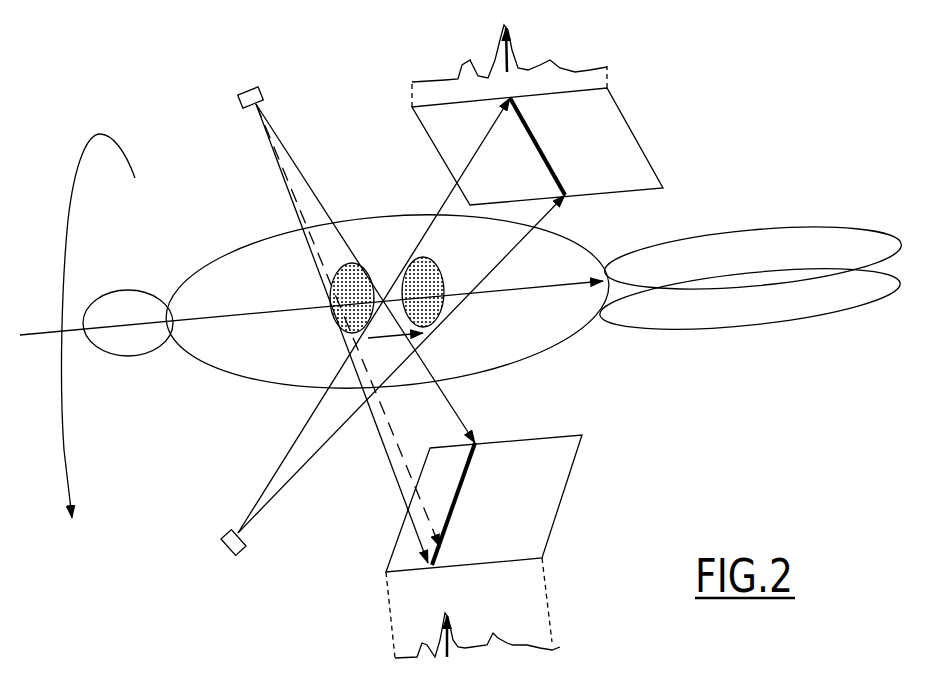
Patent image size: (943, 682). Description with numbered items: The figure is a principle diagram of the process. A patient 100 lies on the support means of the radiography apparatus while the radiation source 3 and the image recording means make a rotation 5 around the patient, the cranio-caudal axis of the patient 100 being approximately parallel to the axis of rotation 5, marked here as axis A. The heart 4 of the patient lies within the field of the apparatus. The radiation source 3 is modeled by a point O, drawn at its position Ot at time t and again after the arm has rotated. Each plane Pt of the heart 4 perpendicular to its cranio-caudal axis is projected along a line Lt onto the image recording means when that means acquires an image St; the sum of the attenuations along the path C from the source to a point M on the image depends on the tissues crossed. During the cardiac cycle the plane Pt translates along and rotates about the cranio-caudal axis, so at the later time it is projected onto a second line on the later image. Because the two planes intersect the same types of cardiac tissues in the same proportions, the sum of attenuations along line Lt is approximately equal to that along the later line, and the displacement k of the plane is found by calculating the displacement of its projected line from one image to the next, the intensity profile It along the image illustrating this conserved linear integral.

The radiation source 3 is at (247, 88).
The heart 4 is at (367, 278).
The rotation 5 is at (68, 203).
The patient 100 is at (516, 345).
The axis of rotation A is at (574, 282).
The path C is at (393, 426).
The point on the image M is at (465, 540).
The displacement k is at (395, 349).
The radiation source point at time t Ot is at (263, 107).
The plane of the heart at time t Pt is at (340, 318).
The image acquired at time t St is at (555, 490).
The projection line at time t Lt is at (460, 486).
The intensity profile at time t It is at (556, 647).